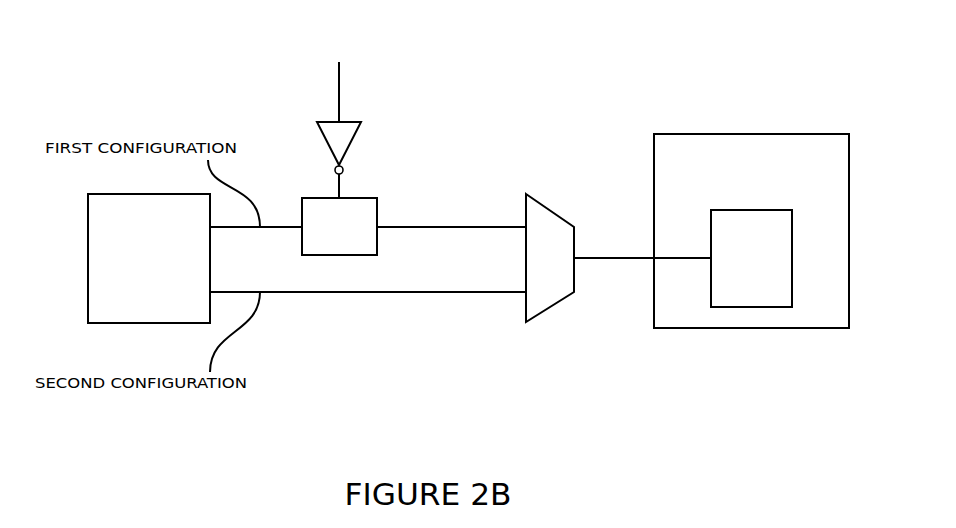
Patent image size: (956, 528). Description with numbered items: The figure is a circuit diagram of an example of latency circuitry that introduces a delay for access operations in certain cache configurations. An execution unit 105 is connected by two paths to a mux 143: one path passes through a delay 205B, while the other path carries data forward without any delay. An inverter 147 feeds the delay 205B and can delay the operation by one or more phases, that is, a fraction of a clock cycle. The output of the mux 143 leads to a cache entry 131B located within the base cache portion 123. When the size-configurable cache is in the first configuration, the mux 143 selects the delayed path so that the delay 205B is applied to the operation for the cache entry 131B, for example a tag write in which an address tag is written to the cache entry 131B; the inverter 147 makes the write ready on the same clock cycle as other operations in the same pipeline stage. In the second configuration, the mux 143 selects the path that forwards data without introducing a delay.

The execution unit 105 is at (149, 258).
The delay 205B is at (339, 226).
The inverter 147 is at (353, 120).
The mux 143 is at (555, 307).
The base cache portion 123 is at (751, 231).
The cache entry 131B is at (751, 258).